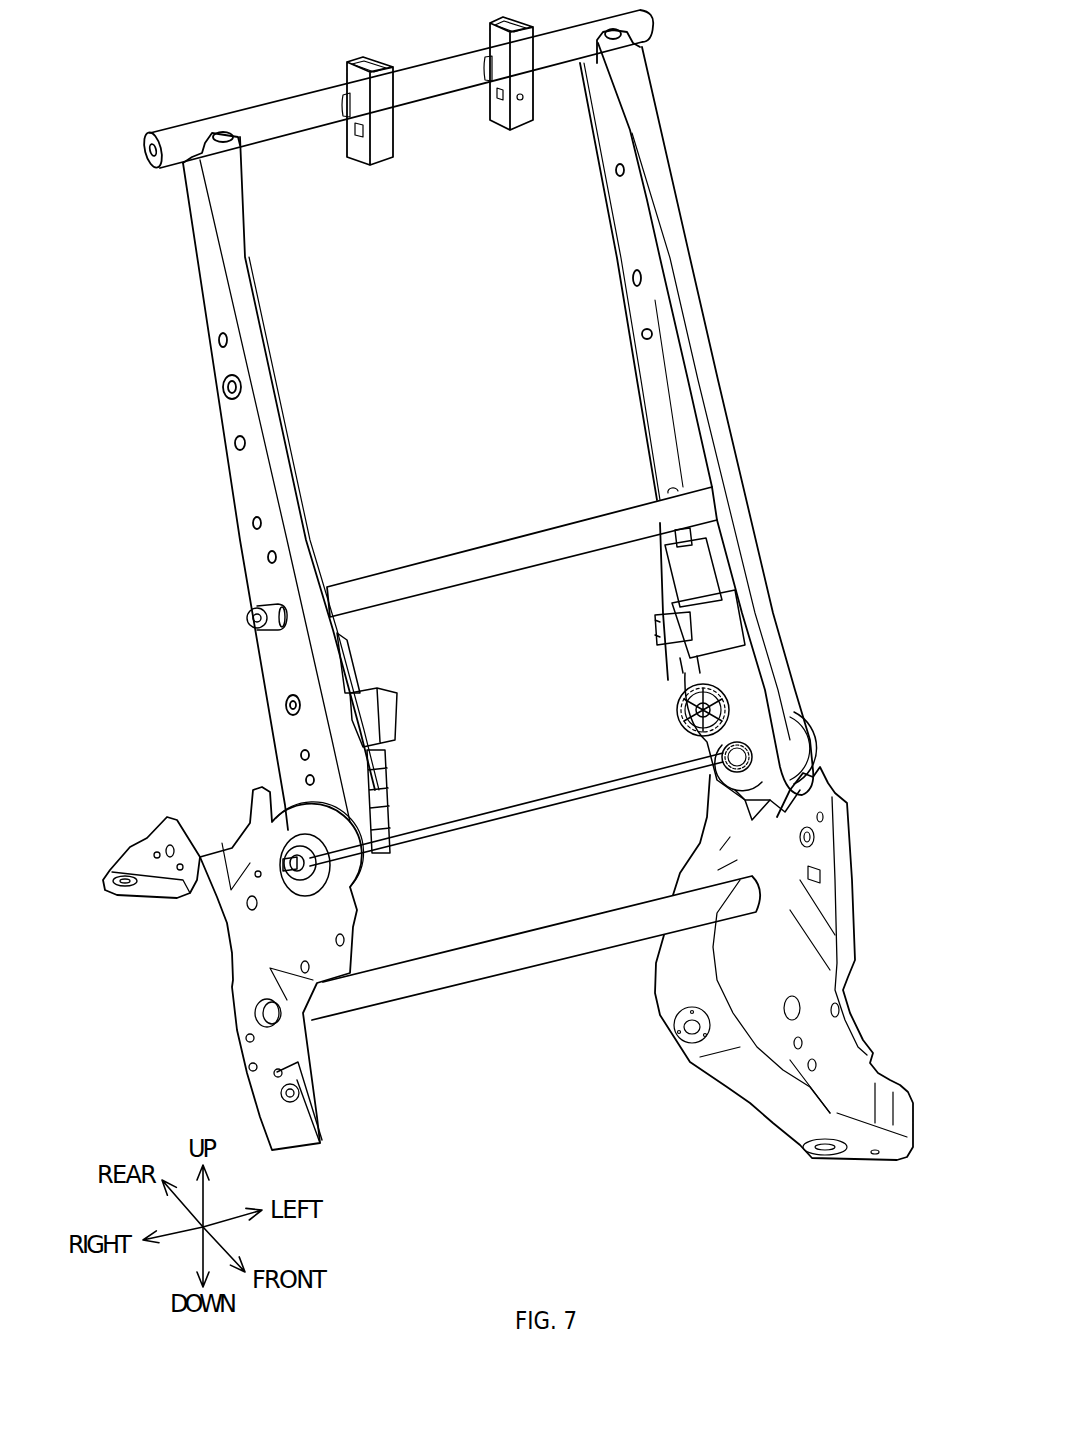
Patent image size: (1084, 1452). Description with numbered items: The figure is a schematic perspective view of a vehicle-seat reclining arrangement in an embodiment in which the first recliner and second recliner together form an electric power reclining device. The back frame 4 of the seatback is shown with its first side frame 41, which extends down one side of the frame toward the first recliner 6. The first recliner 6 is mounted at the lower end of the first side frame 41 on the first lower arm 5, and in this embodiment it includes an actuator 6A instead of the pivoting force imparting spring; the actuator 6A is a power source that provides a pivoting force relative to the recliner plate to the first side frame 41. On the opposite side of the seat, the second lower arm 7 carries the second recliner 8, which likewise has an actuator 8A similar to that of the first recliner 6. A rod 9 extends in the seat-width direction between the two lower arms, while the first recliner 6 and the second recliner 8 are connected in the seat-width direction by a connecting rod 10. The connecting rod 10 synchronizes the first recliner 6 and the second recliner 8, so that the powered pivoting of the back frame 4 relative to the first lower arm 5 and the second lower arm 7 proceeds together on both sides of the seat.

The back frame 4 is at (167, 258).
The first side frame 41 is at (253, 493).
The first lower arm 5 is at (257, 950).
The first recliner 6 is at (301, 806).
The actuator 6A is at (372, 718).
The second lower arm 7 is at (823, 900).
The second recliner 8 is at (807, 714).
The actuator 8A is at (728, 637).
The rod 9 is at (495, 963).
The connecting rod 10 is at (527, 800).